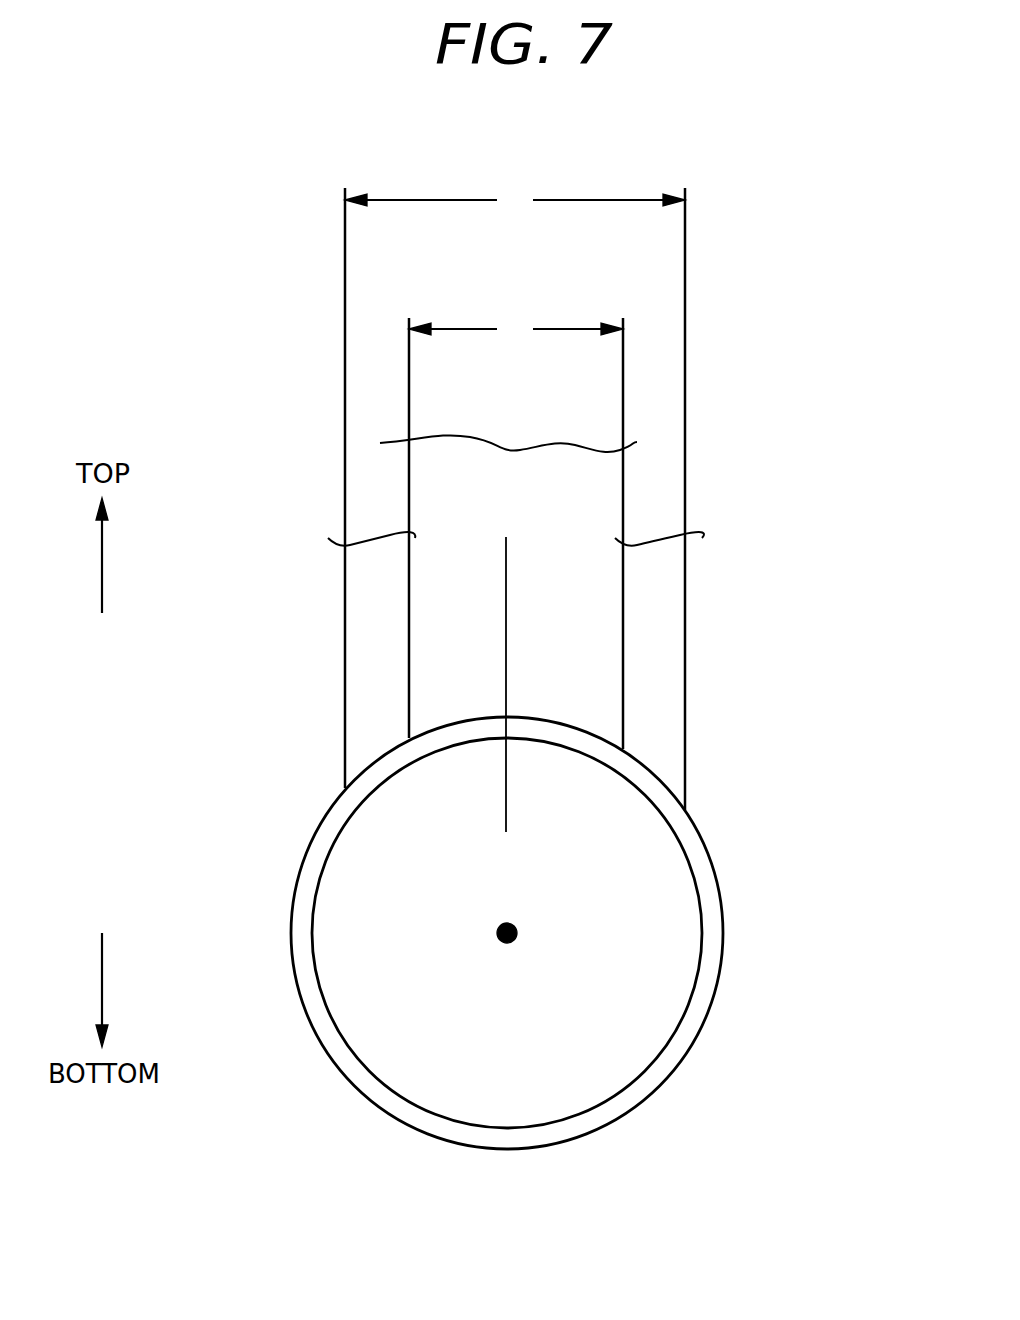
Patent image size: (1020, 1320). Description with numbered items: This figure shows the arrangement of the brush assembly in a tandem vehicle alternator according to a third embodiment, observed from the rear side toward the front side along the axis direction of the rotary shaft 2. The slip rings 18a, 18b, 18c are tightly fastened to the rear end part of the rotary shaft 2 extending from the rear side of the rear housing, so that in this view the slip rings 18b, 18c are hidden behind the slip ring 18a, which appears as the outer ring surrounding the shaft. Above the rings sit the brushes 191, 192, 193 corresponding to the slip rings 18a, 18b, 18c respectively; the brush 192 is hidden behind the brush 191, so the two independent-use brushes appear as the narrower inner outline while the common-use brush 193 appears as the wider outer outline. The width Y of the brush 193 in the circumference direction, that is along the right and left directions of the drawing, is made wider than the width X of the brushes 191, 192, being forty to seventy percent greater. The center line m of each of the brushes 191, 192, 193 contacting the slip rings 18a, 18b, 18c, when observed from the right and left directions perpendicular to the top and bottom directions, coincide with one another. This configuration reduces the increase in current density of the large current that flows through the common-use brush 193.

The rotary shaft 2 is at (657, 985).
The slip ring 18a is at (585, 957).
The slip ring 18b is at (585, 957).
The slip ring 18c is at (652, 1093).
The brush 191 is at (629, 533).
The brush 192 is at (593, 500).
The brush 193 is at (655, 662).
The center line m is at (506, 608).
The width of the brushes 191 and 192 X is at (516, 329).
The width of the brush 193 Y is at (515, 200).